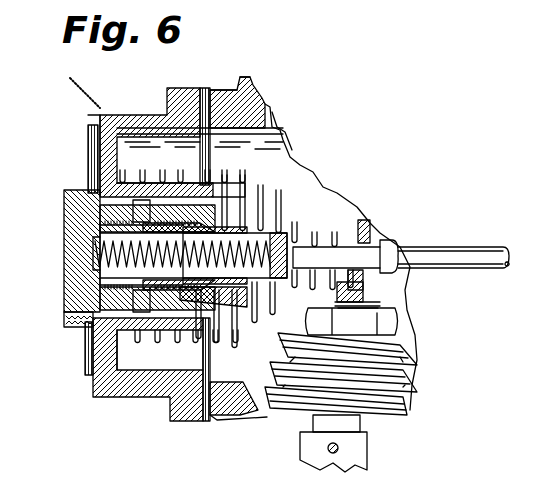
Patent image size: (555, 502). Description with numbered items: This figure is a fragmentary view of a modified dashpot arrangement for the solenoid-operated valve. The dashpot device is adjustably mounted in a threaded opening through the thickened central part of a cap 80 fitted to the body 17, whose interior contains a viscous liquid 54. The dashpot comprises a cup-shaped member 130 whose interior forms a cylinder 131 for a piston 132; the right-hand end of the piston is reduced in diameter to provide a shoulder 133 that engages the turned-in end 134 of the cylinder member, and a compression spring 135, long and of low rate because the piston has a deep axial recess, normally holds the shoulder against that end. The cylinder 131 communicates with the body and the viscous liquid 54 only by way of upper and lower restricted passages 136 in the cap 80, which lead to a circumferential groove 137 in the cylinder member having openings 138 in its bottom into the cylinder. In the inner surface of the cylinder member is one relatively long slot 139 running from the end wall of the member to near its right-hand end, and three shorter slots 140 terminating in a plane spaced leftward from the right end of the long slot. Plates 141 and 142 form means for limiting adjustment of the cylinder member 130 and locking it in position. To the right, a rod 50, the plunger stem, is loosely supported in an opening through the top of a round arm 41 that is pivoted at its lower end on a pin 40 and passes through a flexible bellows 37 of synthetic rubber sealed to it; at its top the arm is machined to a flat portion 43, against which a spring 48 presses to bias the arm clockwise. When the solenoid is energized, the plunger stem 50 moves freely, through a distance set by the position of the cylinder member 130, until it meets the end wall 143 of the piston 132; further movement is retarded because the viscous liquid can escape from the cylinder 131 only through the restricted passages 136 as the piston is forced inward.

The body 17 is at (218, 420).
The flexible bellows 37 is at (410, 376).
The pin 40 is at (335, 470).
The round arm 41 is at (360, 420).
The flat portion 43 is at (378, 240).
The spring 48 is at (245, 175).
The rod 50 is at (432, 256).
The viscous liquid 54 is at (272, 120).
The cap 80 is at (150, 118).
The cup-shaped member 130 is at (75, 208).
The cylinder 131 is at (110, 229).
The piston 132 is at (250, 190).
The shoulder 133 is at (265, 212).
The turned-in end 134 is at (266, 352).
The compression spring 135 is at (100, 283).
The restricted passages 136 is at (160, 175).
The circumferential groove 137 is at (171, 369).
The openings 138 is at (145, 280).
The long slot 139 is at (205, 175).
The shorter slots 140 is at (183, 332).
The plate 141 is at (88, 155).
The plate 142 is at (100, 109).
The end wall 143 is at (303, 230).